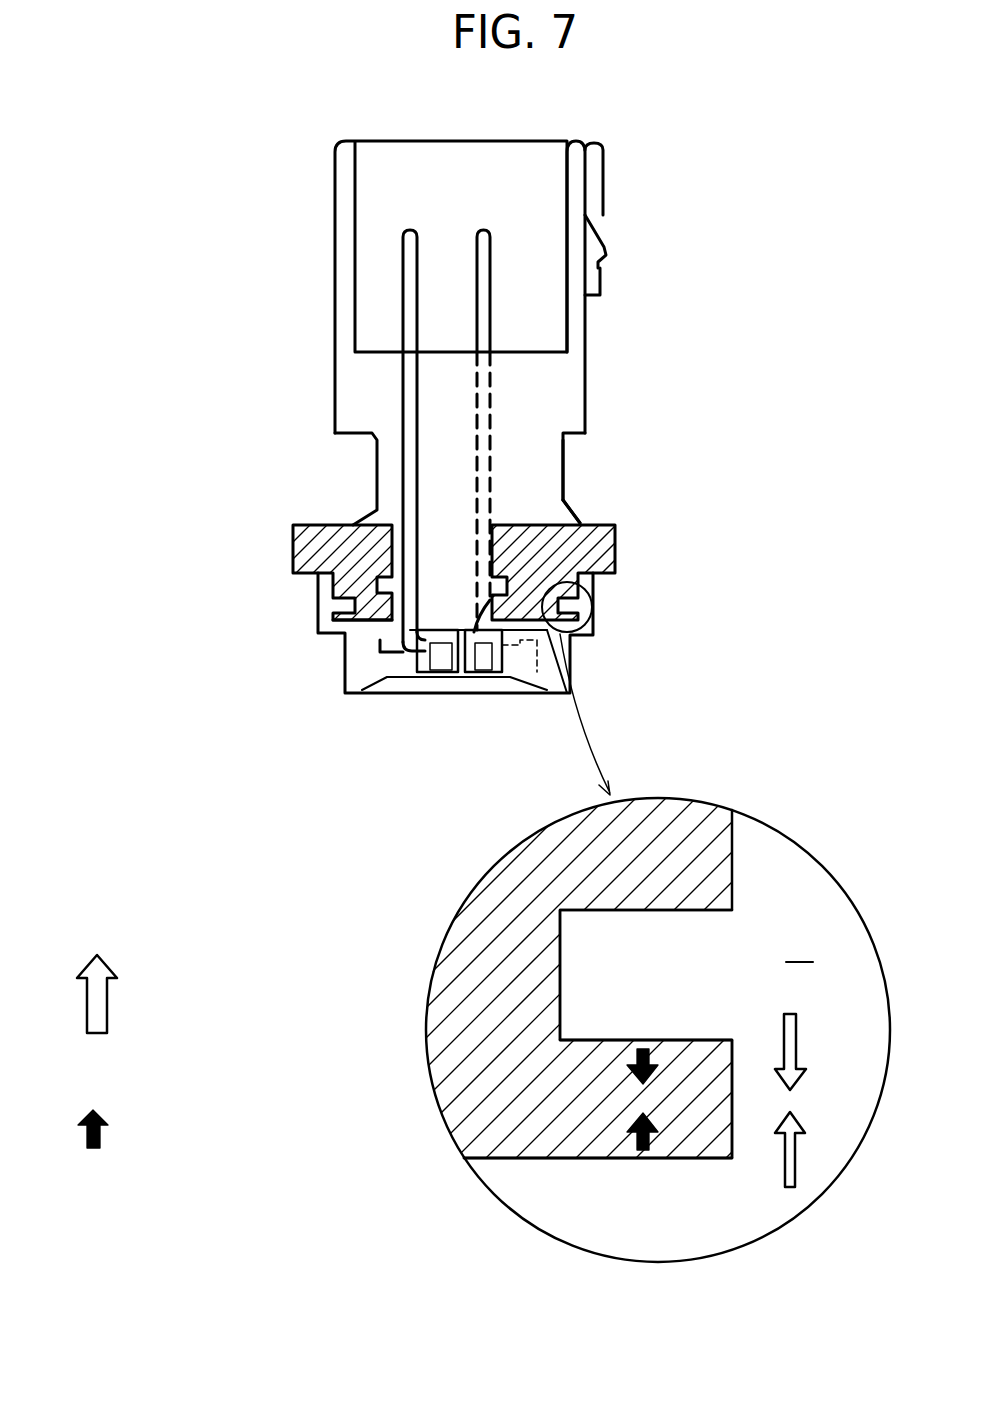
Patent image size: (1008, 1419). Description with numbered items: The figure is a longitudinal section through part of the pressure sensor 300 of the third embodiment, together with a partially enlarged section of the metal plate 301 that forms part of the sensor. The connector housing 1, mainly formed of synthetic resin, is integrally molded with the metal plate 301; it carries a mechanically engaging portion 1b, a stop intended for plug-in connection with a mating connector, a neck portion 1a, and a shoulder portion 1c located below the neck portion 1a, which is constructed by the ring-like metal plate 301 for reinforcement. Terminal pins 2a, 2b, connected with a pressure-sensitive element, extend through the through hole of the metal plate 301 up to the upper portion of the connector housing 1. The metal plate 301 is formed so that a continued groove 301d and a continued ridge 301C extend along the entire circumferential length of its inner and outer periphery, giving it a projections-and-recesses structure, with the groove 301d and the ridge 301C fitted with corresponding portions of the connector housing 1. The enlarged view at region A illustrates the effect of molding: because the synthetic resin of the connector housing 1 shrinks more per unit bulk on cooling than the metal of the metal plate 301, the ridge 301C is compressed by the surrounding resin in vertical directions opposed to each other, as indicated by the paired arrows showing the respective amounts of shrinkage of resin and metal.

The pressure sensor 300 is at (723, 215).
The connector housing 1 is at (565, 387).
The neck portion 1a is at (565, 468).
The mechanically engaging portion 1b is at (607, 257).
The shoulder portion 1c is at (577, 525).
The terminal pin 2a is at (403, 283).
The terminal pin 2b is at (472, 253).
The metal plate 301 is at (317, 553).
The groove 301d is at (658, 981).
The ridge 301C is at (700, 1112).
The bottom surface of fixing member A is at (343, 642).